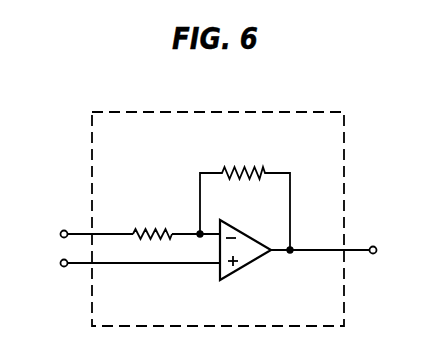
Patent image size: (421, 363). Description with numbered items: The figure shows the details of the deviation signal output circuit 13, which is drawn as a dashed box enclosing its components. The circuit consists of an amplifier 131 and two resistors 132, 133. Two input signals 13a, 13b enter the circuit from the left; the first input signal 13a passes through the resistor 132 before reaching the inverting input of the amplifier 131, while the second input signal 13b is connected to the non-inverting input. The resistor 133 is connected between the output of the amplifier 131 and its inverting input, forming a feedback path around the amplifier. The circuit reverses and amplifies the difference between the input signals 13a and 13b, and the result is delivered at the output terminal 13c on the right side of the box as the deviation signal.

The deviation signal output circuit 13 is at (327, 100).
The input signal 13a is at (80, 222).
The input signal 13b is at (123, 280).
The output terminal 13c is at (330, 234).
The amplifier 131 is at (247, 268).
The resistor 132 is at (153, 228).
The resistor 133 is at (248, 168).